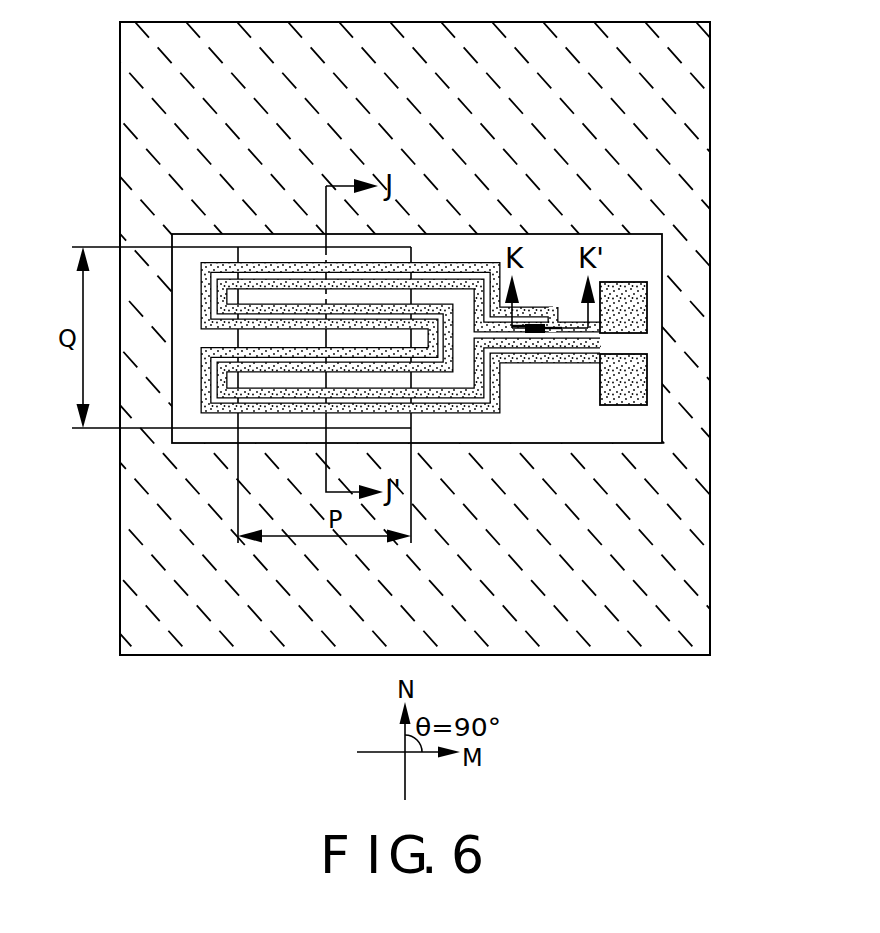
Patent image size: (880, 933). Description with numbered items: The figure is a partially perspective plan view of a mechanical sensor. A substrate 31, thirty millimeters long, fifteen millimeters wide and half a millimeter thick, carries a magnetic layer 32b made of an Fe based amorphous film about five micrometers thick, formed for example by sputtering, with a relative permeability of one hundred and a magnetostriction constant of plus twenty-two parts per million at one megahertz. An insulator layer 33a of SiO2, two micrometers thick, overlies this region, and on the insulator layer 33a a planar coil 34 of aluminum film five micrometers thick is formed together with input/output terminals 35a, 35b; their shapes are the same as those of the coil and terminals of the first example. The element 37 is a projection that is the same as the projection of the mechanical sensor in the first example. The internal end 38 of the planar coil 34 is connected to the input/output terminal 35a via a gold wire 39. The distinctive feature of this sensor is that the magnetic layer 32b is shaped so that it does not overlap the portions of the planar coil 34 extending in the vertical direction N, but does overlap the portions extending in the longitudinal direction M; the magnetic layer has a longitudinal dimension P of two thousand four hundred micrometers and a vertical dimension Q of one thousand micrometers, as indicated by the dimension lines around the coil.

The substrate 31 is at (150, 56).
The magnetic layer 32b is at (265, 250).
The insulator layer 33a is at (645, 242).
The planar coil 34 is at (200, 267).
The input/output terminal 35a is at (635, 293).
The input/output terminal 35b is at (635, 372).
The projection 37 is at (558, 334).
The internal end 38 is at (535, 334).
The gold wire 39 is at (556, 330).